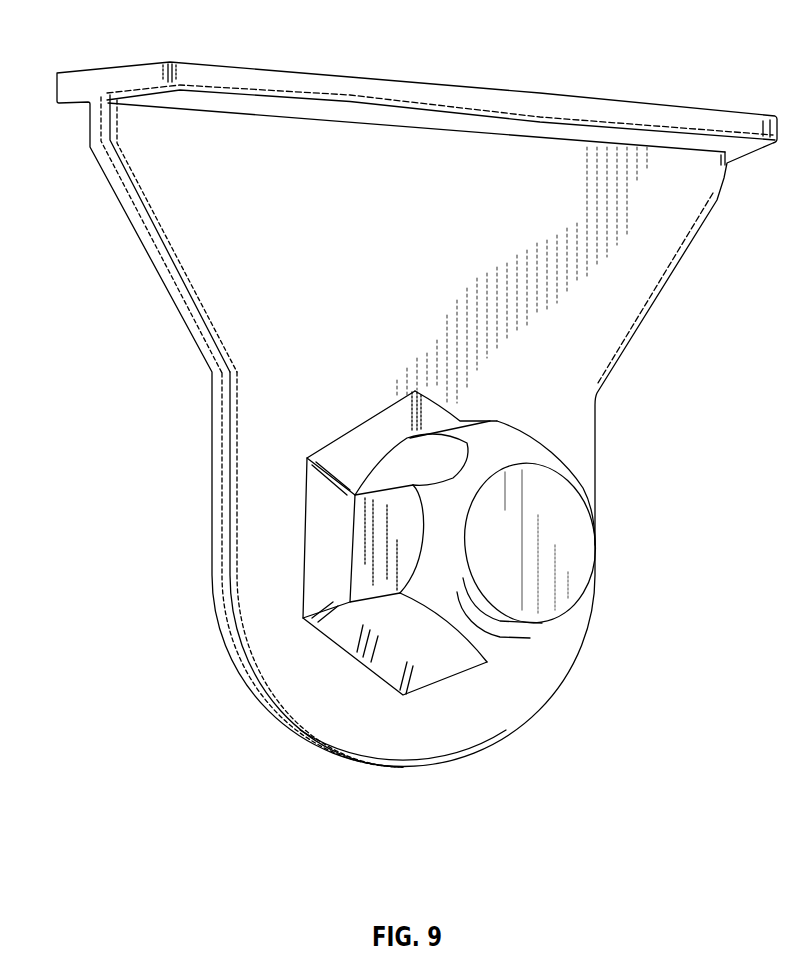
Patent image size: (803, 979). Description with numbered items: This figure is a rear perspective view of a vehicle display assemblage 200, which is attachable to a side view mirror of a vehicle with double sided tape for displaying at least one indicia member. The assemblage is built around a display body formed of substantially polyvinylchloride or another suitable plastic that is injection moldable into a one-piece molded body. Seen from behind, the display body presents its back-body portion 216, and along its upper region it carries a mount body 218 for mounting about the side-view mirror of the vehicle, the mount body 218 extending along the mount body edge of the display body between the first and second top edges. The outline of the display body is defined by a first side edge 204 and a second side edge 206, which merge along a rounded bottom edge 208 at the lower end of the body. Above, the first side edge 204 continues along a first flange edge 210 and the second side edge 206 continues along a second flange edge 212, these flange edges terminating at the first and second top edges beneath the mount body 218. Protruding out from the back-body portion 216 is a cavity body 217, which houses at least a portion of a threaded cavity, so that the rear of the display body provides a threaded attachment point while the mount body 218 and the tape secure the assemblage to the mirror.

The vehicle display assemblage 200 is at (573, 727).
The first side edge 204 is at (215, 522).
The second side edge 206 is at (592, 624).
The rounded bottom edge 208 is at (400, 770).
The first flange edge 210 is at (150, 256).
The second flange edge 212 is at (655, 295).
The back-body portion 216 is at (560, 423).
The cavity body 217 is at (503, 535).
The mount body 218 is at (422, 117).